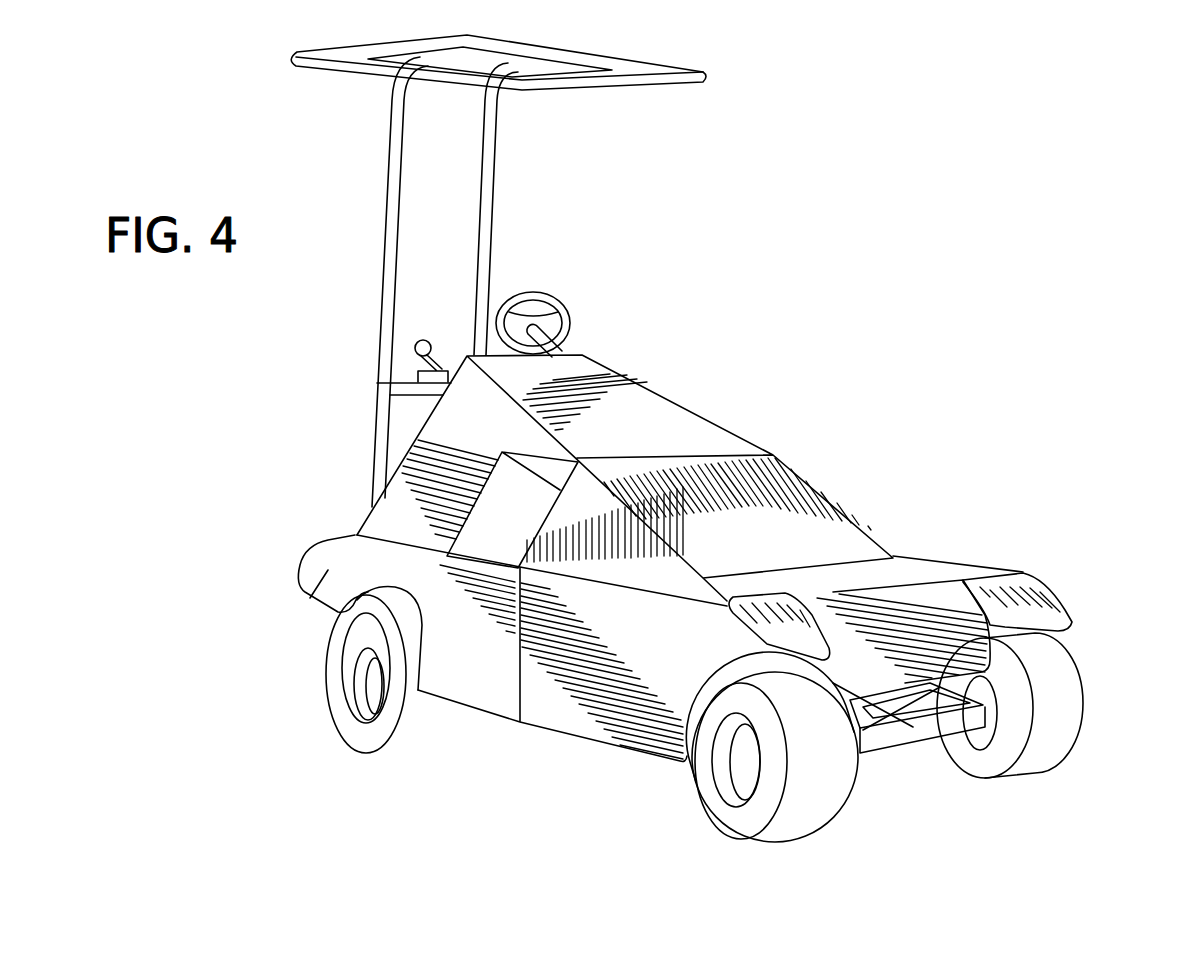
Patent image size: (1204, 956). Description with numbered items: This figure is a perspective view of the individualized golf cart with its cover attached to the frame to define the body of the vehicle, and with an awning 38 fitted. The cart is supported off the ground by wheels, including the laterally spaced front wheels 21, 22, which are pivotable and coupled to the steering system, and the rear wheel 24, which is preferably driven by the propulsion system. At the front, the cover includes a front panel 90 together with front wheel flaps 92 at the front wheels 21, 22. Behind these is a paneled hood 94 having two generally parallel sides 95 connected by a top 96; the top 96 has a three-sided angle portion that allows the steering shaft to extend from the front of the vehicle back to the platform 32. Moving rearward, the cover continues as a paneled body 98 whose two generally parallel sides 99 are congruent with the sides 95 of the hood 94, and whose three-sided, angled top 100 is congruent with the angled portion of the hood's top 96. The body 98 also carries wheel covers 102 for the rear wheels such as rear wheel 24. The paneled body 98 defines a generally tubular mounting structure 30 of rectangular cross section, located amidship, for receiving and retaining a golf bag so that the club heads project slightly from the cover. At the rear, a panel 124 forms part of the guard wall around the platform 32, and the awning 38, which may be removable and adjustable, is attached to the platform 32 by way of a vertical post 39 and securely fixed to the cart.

The awning 38 is at (640, 76).
The vertical post 39 is at (398, 178).
The platform 32 is at (343, 441).
The panel 124 is at (410, 410).
The mounting structure 30 is at (490, 530).
The top 100 is at (675, 444).
The top 96 is at (772, 561).
The sides 95 is at (625, 628).
The sides 99 is at (472, 676).
The wheel covers 102 is at (310, 598).
The rear wheel 24 is at (367, 733).
The paneled body 98 is at (409, 531).
The paneled hood 94 is at (645, 617).
The front wheel 22 is at (812, 798).
The front wheel flaps 92 is at (803, 645).
The front panel 90 is at (868, 673).
The front wheel 21 is at (1040, 755).